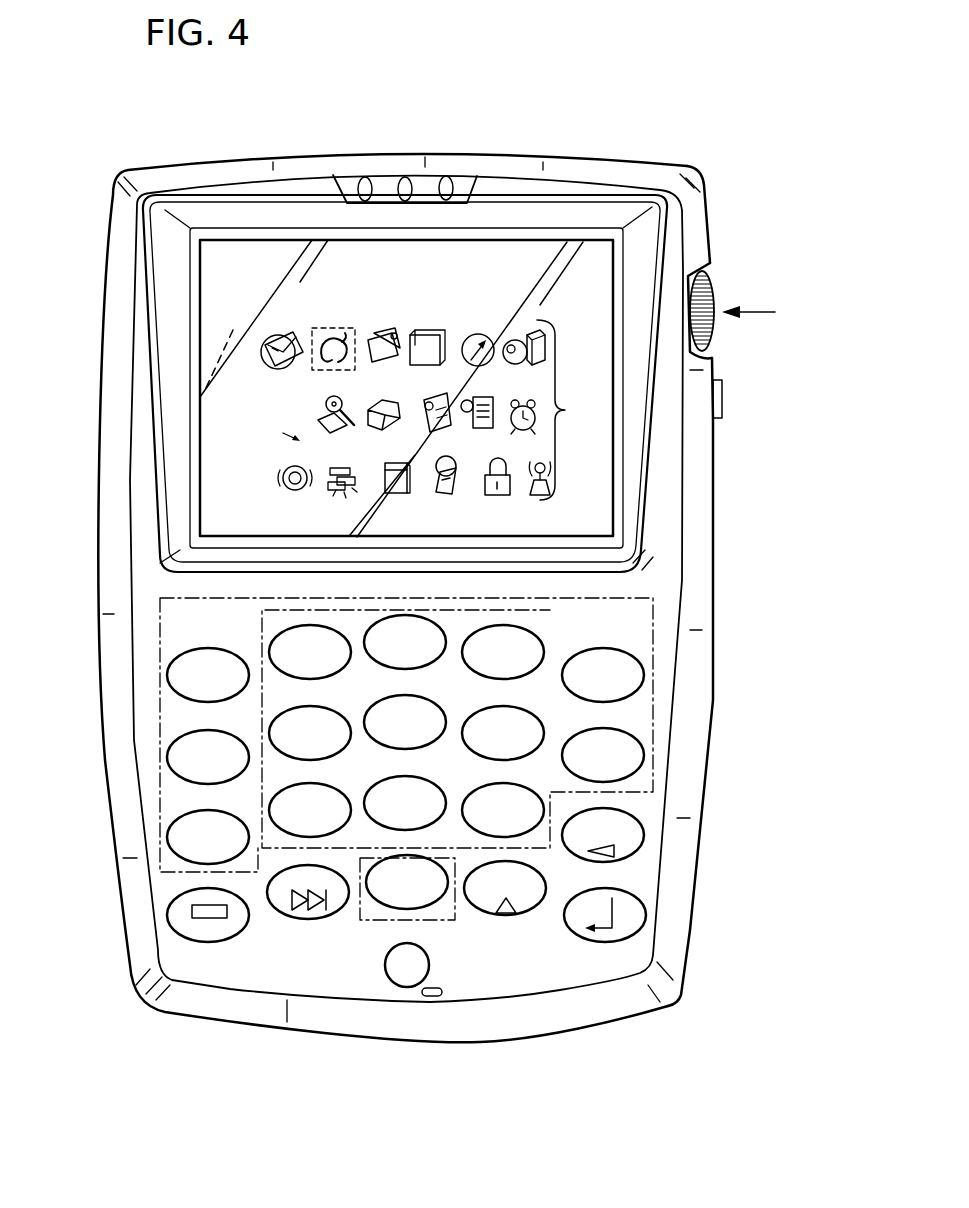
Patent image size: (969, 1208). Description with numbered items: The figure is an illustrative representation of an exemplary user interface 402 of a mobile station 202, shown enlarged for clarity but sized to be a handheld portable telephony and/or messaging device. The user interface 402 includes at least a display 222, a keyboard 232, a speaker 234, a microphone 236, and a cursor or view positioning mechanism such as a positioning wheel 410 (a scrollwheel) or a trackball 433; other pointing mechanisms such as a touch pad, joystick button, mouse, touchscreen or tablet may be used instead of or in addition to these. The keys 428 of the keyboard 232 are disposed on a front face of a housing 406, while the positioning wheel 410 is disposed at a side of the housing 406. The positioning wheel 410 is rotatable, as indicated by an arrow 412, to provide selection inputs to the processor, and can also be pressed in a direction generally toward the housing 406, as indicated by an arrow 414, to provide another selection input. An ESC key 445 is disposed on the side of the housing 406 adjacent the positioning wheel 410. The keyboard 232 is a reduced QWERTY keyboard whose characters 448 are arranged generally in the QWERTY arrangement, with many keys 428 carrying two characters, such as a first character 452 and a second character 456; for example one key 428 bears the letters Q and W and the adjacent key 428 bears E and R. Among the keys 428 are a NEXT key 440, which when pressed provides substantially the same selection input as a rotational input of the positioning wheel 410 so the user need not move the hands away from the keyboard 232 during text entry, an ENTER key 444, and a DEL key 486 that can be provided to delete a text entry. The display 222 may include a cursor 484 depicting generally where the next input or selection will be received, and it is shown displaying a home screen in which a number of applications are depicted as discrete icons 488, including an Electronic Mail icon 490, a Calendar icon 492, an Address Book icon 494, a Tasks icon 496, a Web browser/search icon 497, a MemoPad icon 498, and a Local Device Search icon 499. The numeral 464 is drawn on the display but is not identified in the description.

The mobile station 202 is at (241, 147).
The speaker 234 is at (399, 177).
The housing 406 is at (572, 160).
The arrow 412 is at (775, 370).
The arrow 414 is at (760, 311).
The positioning wheel 410 is at (712, 334).
The ESC key 445 is at (722, 402).
The display 222 is at (598, 262).
The user interface 402 is at (728, 605).
The Electronic Mail (E-Mail) icon 490 is at (276, 340).
The cursor 484 is at (325, 330).
The Address Book icon 494 is at (387, 327).
The Calendar icon 492 is at (427, 330).
The cursor 464 is at (469, 323).
The MemoPad icon 498 is at (514, 357).
The Web browser/search icon 497 is at (276, 403).
The Local Device Search icon 499 is at (340, 408).
The Tasks icon 496 is at (437, 398).
The icons 488 is at (565, 410).
The keys 428 is at (186, 656).
The characters 448 is at (620, 693).
The first character 452 is at (591, 670).
The second character 456 is at (616, 668).
The keyboard 232 is at (658, 741).
The DEL key 486 is at (645, 845).
The ENTER key 444 is at (640, 892).
The trackball 433 is at (427, 950).
The NEXT key 440 is at (312, 918).
The microphone 236 is at (432, 996).